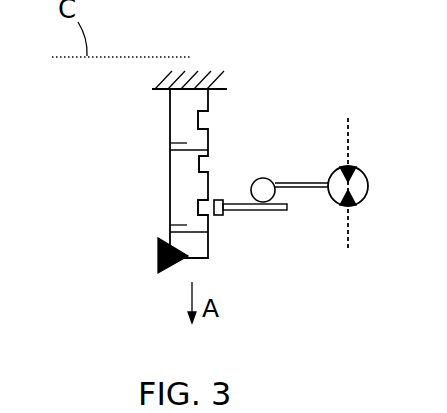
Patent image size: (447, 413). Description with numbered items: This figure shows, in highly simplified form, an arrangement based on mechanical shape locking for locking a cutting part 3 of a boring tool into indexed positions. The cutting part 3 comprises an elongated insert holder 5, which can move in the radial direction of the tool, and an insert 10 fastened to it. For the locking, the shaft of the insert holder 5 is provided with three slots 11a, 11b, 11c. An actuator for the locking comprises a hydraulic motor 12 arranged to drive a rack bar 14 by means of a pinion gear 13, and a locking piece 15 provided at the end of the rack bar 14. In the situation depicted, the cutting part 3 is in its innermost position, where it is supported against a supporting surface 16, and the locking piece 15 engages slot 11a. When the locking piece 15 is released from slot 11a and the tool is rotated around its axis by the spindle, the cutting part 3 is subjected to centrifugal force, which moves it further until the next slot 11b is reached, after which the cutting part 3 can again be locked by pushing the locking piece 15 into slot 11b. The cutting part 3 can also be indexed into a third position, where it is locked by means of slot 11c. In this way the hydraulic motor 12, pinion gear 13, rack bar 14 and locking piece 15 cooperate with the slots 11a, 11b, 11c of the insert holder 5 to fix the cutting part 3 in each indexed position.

The cutting part 3 is at (85, 237).
The insert holder 5 is at (198, 244).
The insert 10 is at (158, 263).
The slot 11a is at (198, 206).
The slot 11b is at (205, 164).
The slot 11c is at (203, 118).
The hydraulic motor 12 is at (358, 183).
The pinion gear 13 is at (264, 178).
The rack bar 14 is at (270, 210).
The locking piece 15 is at (219, 199).
The supporting surface 16 is at (162, 90).